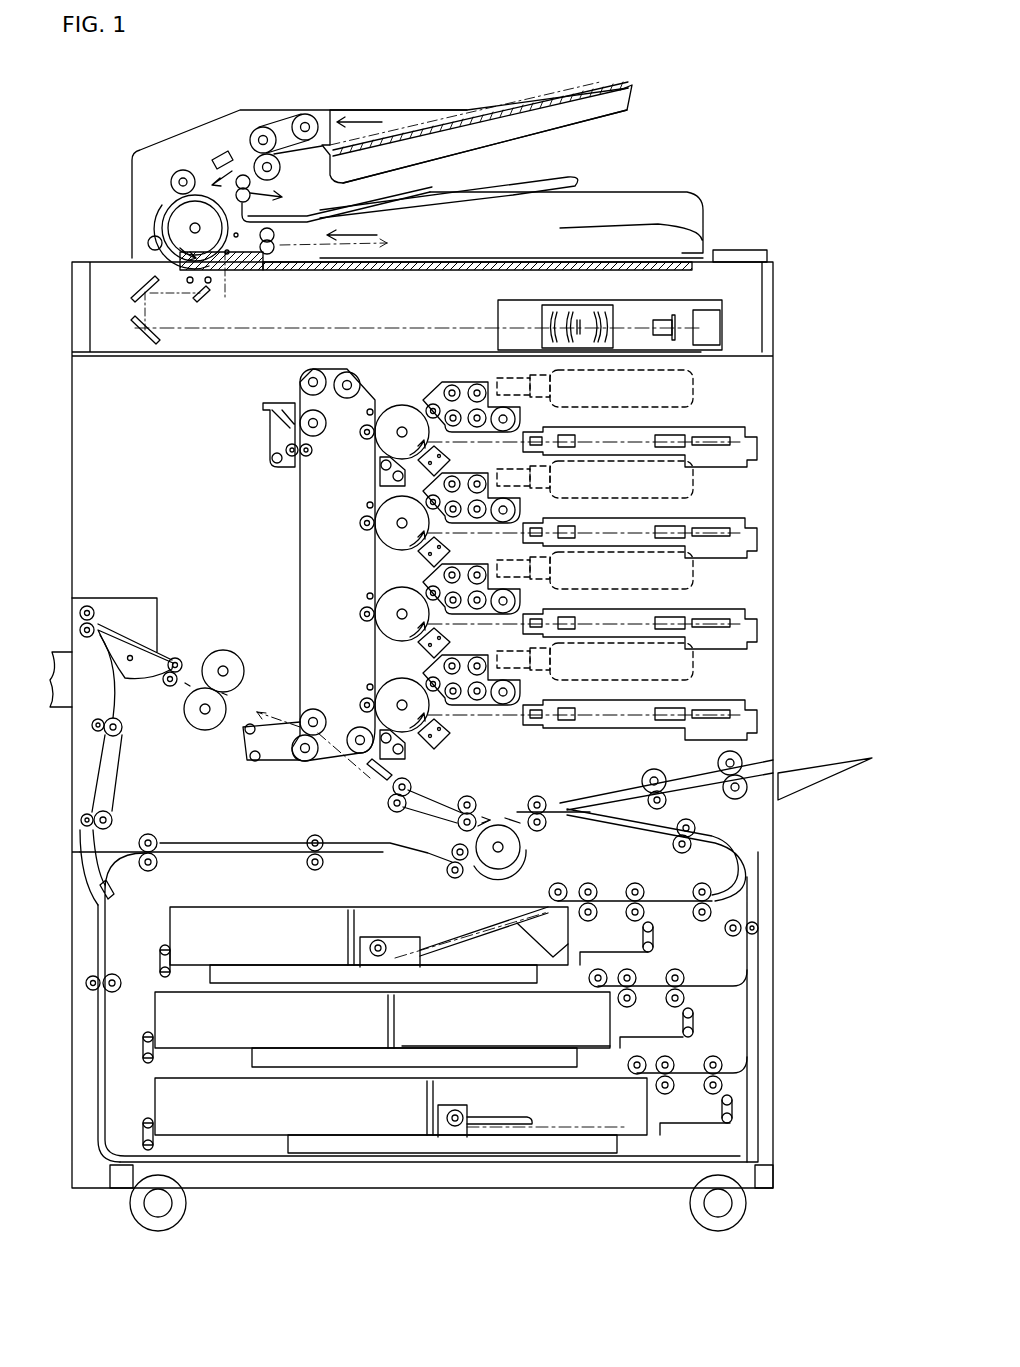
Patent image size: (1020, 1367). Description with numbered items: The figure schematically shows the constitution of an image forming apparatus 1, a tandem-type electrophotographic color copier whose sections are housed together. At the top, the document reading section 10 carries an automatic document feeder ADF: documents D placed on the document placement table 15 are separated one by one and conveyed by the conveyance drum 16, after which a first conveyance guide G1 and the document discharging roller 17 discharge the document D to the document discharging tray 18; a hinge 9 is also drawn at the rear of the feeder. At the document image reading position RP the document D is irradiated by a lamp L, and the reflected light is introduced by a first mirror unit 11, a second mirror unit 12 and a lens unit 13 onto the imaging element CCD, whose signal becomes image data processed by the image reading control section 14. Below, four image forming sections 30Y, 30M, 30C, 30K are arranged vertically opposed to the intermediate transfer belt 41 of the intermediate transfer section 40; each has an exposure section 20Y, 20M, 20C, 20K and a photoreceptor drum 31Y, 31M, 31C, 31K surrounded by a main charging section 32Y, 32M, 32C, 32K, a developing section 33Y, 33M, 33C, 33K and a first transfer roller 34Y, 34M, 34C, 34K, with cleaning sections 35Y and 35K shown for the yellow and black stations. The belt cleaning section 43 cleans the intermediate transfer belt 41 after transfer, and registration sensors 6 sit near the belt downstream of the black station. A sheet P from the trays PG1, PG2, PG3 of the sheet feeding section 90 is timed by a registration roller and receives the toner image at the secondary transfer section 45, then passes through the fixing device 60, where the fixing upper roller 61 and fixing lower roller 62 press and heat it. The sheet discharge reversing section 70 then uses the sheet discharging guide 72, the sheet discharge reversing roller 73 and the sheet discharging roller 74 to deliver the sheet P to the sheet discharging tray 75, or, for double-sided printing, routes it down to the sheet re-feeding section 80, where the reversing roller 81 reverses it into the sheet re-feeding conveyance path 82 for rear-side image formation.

The image forming apparatus 1 is at (800, 160).
The automatic document feeder ADF is at (681, 153).
The document placement table 15 is at (570, 82).
The document D is at (490, 102).
The document discharging tray 18 is at (498, 180).
The document discharging roller 17 is at (258, 192).
The conveyance drum 16 is at (160, 222).
The hinge 9 is at (742, 248).
The document reading section 10 is at (760, 318).
The first conveyance guide G1 is at (250, 272).
The document image reading position RP is at (232, 280).
The lamp L is at (212, 295).
The first mirror unit 11 is at (190, 302).
The second mirror unit 12 is at (132, 330).
The lens unit 13 is at (570, 303).
The imaging element CCD is at (678, 315).
The image reading control section 14 is at (708, 330).
The intermediate transfer section 40 is at (289, 534).
The intermediate transfer belt 41 is at (298, 488).
The belt cleaning section 43 is at (262, 433).
The developing section 33Y is at (445, 392).
The photoreceptor drum 31Y is at (392, 416).
The image forming section 30Y is at (555, 388).
The main charging section 32Y is at (452, 456).
The first transfer roller 34Y is at (360, 452).
The cleaning section 35Y is at (378, 483).
The exposure section 20Y is at (652, 468).
The developing section 33M is at (455, 478).
The photoreceptor drum 31M is at (375, 552).
The image forming section 30M is at (550, 479).
The main charging section 32M is at (452, 547).
The first transfer roller 34M is at (360, 528).
The exposure section 20M is at (652, 556).
The developing section 33C is at (455, 567).
The photoreceptor drum 31C is at (375, 626).
The image forming section 30C is at (550, 570).
The main charging section 32C is at (458, 633).
The first transfer roller 34C is at (360, 611).
The exposure section 20C is at (652, 649).
The developing section 33K is at (458, 659).
The photoreceptor drum 31K is at (375, 686).
The image forming section 30K is at (550, 663).
The main charging section 32K is at (452, 732).
The first transfer roller 34K is at (360, 700).
The cleaning section 35K is at (408, 752).
The exposure section 20K is at (606, 742).
The registration sensor 6 is at (395, 772).
The secondary transfer section 45 is at (280, 776).
The sheet re-feeding conveyance path 82 is at (232, 842).
The sheet P is at (587, 1130).
The sheet feeding section 90 is at (762, 890).
The fixing device 60 is at (228, 638).
The fixing upper roller 61 is at (238, 658).
The fixing lower roller 62 is at (197, 732).
The sheet discharge reversing section 70 is at (106, 650).
The sheet discharging guide 72 is at (138, 683).
The sheet discharge reversing roller 73 is at (128, 740).
The sheet discharging roller 74 is at (96, 614).
The sheet discharging tray 75 is at (55, 648).
The sheet re-feeding section 80 is at (174, 890).
The reversing roller 81 is at (116, 992).
The tray PG1 is at (364, 945).
The tray PG2 is at (376, 1029).
The tray PG3 is at (395, 1115).